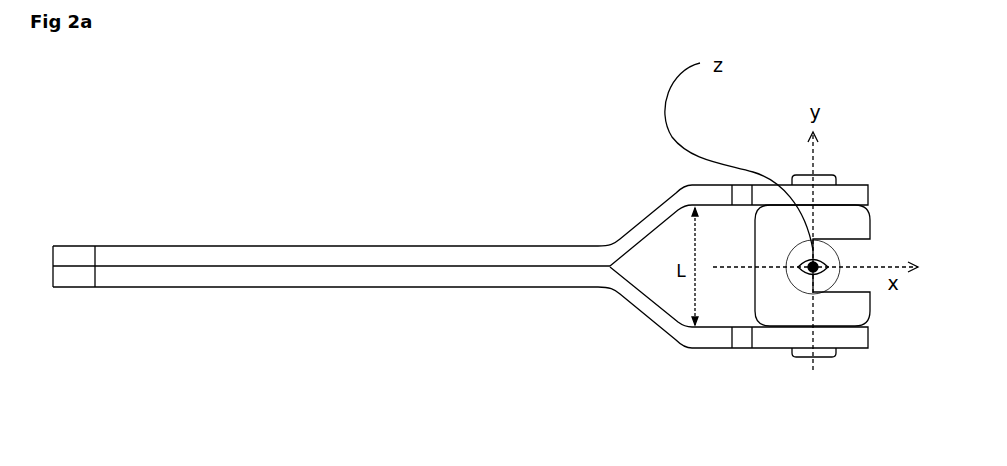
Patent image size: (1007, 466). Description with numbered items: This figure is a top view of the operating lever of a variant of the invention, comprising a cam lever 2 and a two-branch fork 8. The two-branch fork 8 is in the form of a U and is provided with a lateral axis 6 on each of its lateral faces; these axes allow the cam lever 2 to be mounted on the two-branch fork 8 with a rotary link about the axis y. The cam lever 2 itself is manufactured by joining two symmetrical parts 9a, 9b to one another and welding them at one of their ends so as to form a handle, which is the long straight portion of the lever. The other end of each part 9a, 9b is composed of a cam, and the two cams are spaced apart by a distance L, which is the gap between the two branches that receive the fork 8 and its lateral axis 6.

The cam lever 2 is at (313, 300).
The part of the cam lever 9a is at (590, 279).
The part of the cam lever 9b is at (590, 253).
The two-branch fork 8 is at (863, 302).
The lateral axis 6 is at (828, 358).